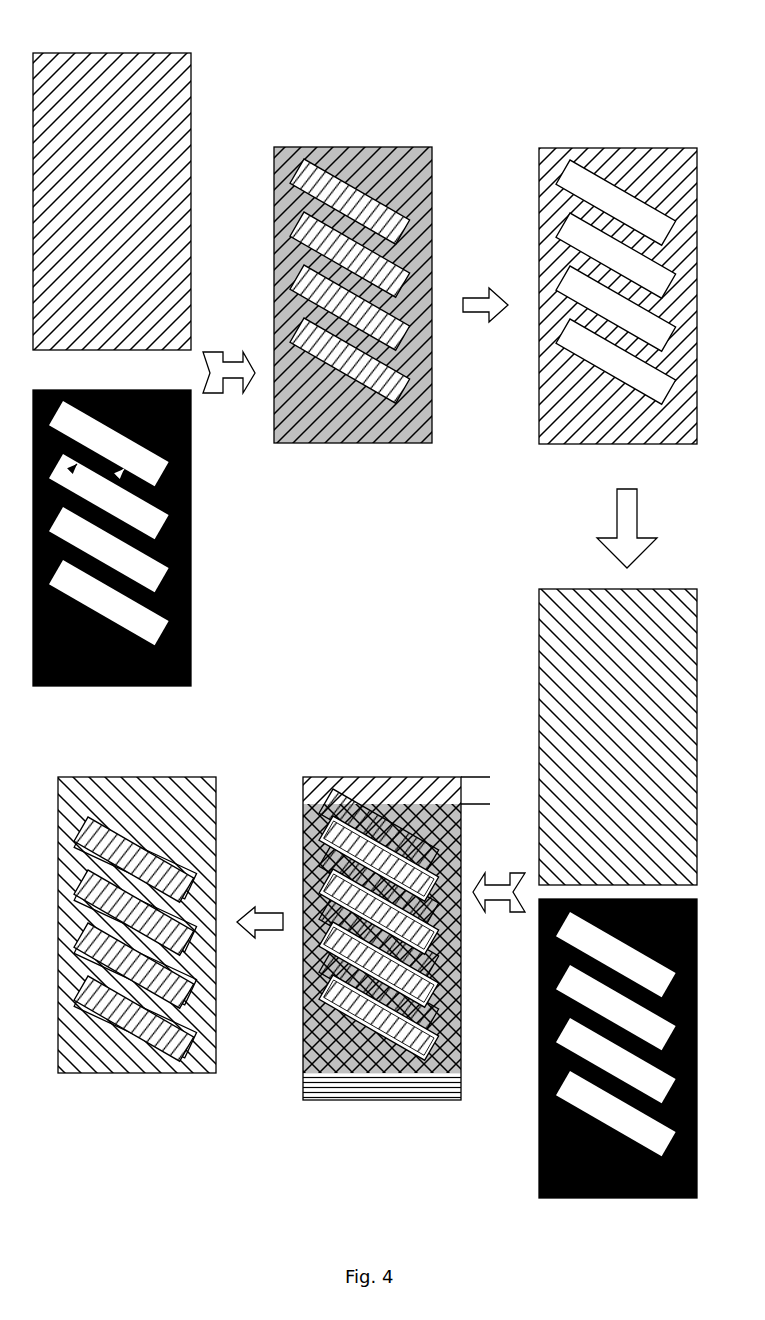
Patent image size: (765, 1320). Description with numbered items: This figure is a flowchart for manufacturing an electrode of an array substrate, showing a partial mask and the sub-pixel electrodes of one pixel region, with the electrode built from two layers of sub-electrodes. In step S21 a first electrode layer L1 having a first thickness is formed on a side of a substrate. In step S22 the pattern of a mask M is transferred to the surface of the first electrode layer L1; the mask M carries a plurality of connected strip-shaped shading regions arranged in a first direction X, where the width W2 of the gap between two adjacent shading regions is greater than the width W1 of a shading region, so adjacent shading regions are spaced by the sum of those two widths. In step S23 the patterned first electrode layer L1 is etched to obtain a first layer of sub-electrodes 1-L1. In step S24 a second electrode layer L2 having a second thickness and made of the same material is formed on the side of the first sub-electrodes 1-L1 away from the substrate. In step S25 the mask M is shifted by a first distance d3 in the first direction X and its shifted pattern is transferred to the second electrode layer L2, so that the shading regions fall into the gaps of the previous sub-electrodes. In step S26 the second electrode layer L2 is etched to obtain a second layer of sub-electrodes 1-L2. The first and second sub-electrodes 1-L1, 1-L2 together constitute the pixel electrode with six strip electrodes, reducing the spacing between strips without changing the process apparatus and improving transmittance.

The first electrode layer L1 is at (188, 105).
The first layer of sub-electrodes 1-L1 is at (703, 125).
The second electrode layer L2 is at (643, 588).
The second layer of sub-electrodes 1-L2 is at (253, 763).
The mask M is at (193, 622).
The width of the strip-shaped shading region W1 is at (110, 437).
The width of the gap between adjacent strip-shaped shading regions W2 is at (163, 433).
The first distance d3 is at (477, 817).
The first direction X is at (292, 785).
The step of forming the first electrode layer S21 is at (119, 31).
The step of transferring the mask pattern to the first electrode layer S22 is at (229, 355).
The step of etching the first electrode layer S23 is at (485, 292).
The step of forming the second electrode layer S24 is at (640, 528).
The step of shifting the mask and transferring its pattern S25 is at (499, 875).
The step of etching the second electrode layer S26 is at (260, 909).